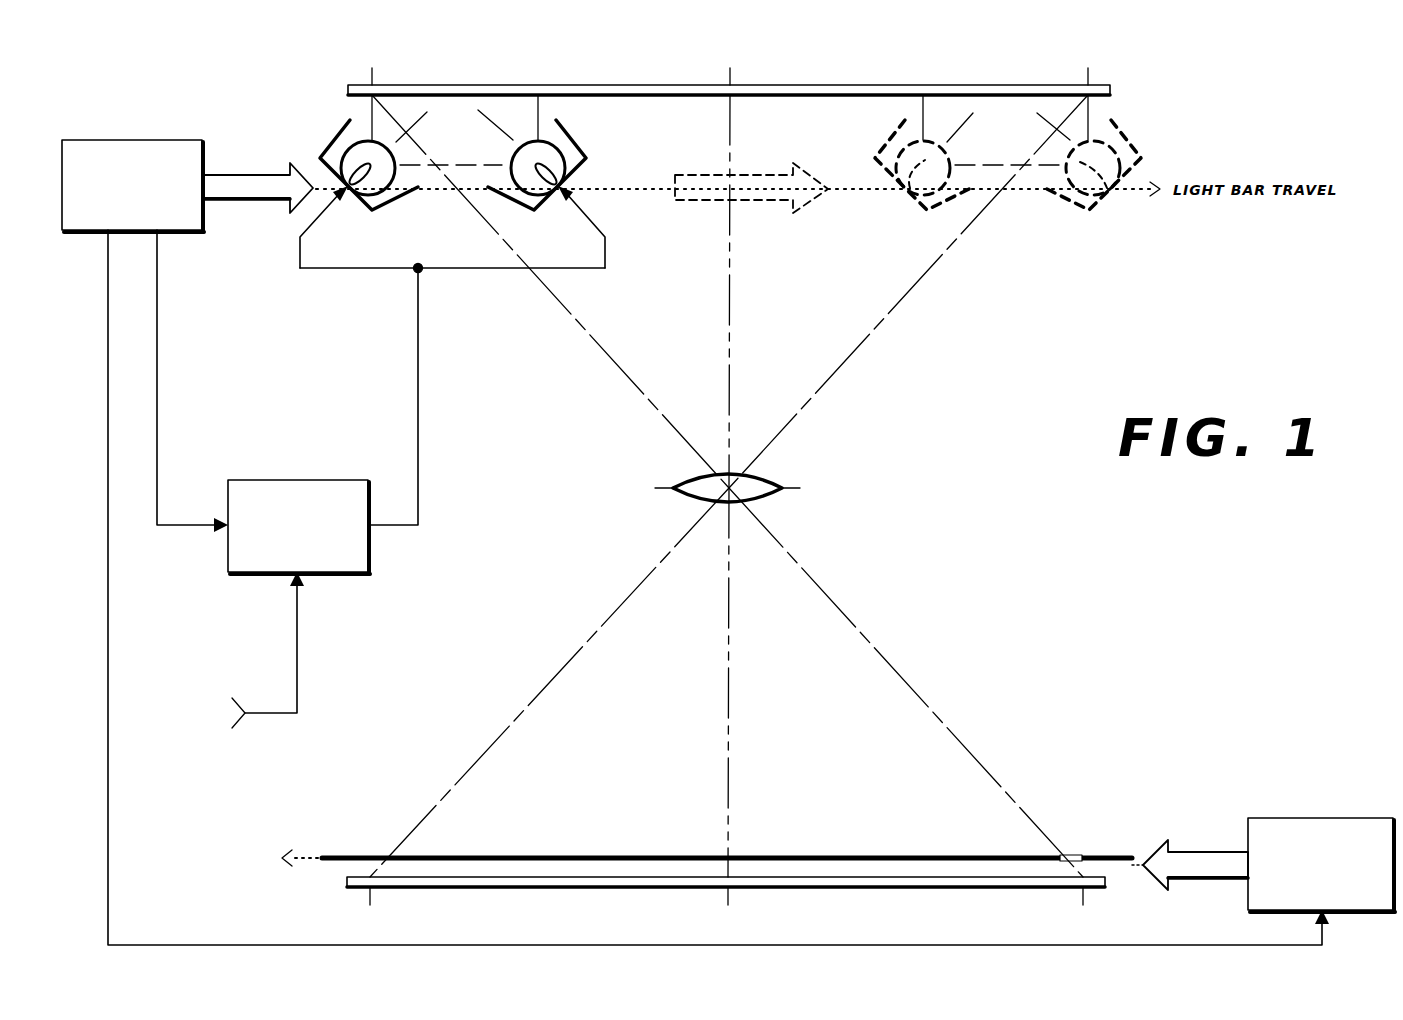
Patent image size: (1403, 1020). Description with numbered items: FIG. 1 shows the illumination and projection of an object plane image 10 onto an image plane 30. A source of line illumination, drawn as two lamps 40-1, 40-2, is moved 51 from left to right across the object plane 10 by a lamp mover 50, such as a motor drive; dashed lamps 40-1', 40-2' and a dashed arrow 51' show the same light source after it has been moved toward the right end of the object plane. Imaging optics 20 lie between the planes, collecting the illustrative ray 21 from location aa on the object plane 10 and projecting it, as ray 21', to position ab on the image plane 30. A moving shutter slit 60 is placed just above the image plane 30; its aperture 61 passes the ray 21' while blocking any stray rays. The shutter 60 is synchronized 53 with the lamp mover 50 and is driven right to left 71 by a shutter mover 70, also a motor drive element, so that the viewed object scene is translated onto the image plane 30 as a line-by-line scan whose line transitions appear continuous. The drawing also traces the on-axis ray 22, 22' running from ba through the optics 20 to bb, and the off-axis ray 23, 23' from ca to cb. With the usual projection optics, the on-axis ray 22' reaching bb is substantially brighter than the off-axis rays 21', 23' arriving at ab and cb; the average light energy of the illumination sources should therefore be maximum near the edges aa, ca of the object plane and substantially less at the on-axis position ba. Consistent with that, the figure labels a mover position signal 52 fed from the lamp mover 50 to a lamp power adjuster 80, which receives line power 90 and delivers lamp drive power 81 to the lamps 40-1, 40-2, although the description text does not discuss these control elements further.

The object plane image 10 is at (929, 85).
The imaging optics 20 is at (672, 493).
The illustrative ray 21 is at (550, 291).
The off-axis ray 21' is at (906, 682).
The optical axis object side 22 is at (752, 291).
The on-axis ray 22' is at (752, 682).
The principal ray from ca 23 is at (908, 291).
The off-axis ray 23' is at (549, 682).
The image plane 30 is at (570, 890).
The source of line illumination 40-1 is at (359, 194).
The source of line illumination 40-2 is at (452, 194).
The first lamp displaced position 40-1' is at (923, 187).
The second lamp displaced position 40-2' is at (1092, 187).
The lamp mover 50 is at (150, 154).
The lamp movement 51 is at (257, 172).
The lamp mover drive displaced 51' is at (751, 174).
The mover position signal 52 is at (157, 415).
The synchronization 53 is at (108, 440).
The moving shutter slit 60 is at (610, 855).
The shutter slit 61 is at (1074, 848).
The shutter mover 70 is at (1350, 826).
The shutter movement 71 is at (1203, 855).
The lamp power adjuster 80 is at (298, 486).
The lamp drive power 81 is at (420, 403).
The line power 90 is at (266, 711).